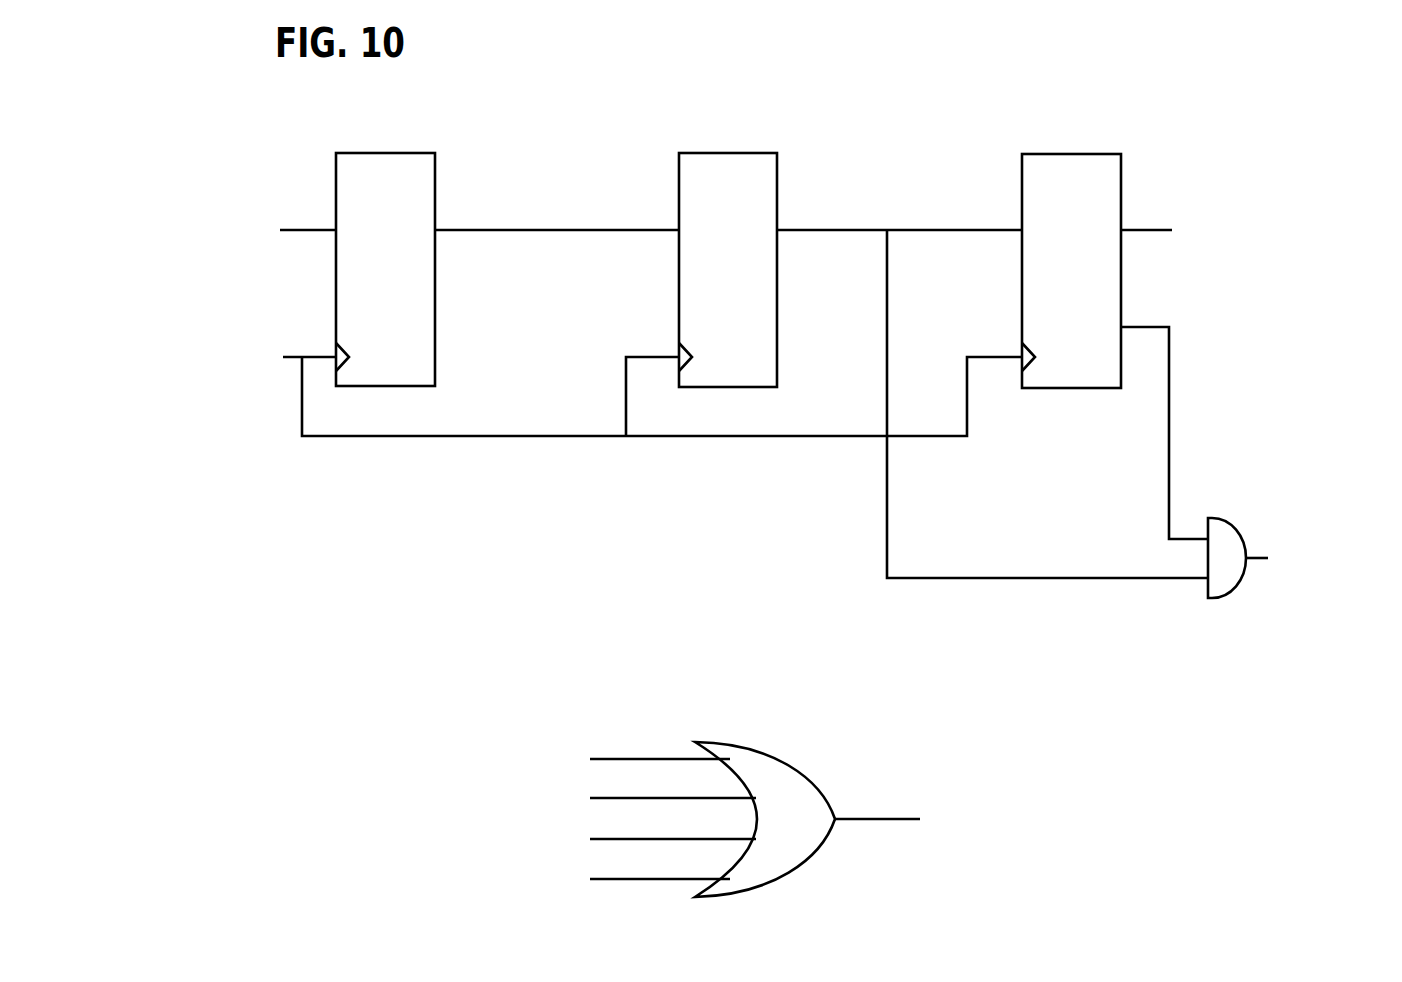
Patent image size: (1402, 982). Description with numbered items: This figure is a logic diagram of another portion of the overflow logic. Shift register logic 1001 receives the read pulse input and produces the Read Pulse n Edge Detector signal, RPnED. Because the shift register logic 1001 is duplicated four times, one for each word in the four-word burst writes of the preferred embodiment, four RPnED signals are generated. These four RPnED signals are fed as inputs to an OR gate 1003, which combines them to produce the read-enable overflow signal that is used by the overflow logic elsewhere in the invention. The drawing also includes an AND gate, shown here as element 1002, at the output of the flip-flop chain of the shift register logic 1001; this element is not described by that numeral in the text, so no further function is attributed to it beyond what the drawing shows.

The shift register logic 1001 is at (766, 344).
The AND gate producing PPn edge detector output 1002 is at (1299, 570).
The OR gate 1003 is at (833, 738).